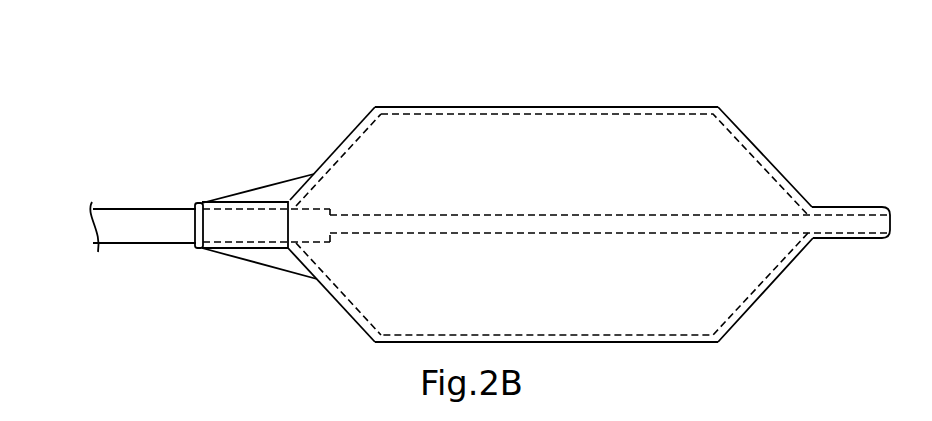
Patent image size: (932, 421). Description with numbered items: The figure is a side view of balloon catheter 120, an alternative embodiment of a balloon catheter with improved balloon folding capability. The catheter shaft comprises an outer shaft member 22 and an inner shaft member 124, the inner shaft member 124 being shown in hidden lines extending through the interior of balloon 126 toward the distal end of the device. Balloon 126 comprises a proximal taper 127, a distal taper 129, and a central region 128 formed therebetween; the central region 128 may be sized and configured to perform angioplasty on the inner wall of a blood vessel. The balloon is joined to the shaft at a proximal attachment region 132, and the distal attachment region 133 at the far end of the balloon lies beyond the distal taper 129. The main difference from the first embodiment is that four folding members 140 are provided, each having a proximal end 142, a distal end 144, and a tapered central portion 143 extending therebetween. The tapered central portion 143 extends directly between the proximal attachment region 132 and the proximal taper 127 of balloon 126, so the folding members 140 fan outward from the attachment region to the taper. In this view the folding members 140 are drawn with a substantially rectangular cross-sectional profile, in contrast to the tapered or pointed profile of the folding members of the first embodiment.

The outer shaft member 22 is at (137, 225).
The balloon catheter 120 is at (80, 118).
The inner shaft member 124 is at (765, 230).
The balloon 126 is at (607, 158).
The proximal taper 127 is at (343, 138).
The central region 128 is at (478, 107).
The distal taper 129 is at (772, 160).
The proximal attachment region 132 is at (213, 223).
The distal attachment region 133 is at (850, 207).
The folding members 140 is at (251, 189).
The proximal end 142 is at (212, 255).
The tapered central portion 143 is at (255, 265).
The distal end 144 is at (315, 280).